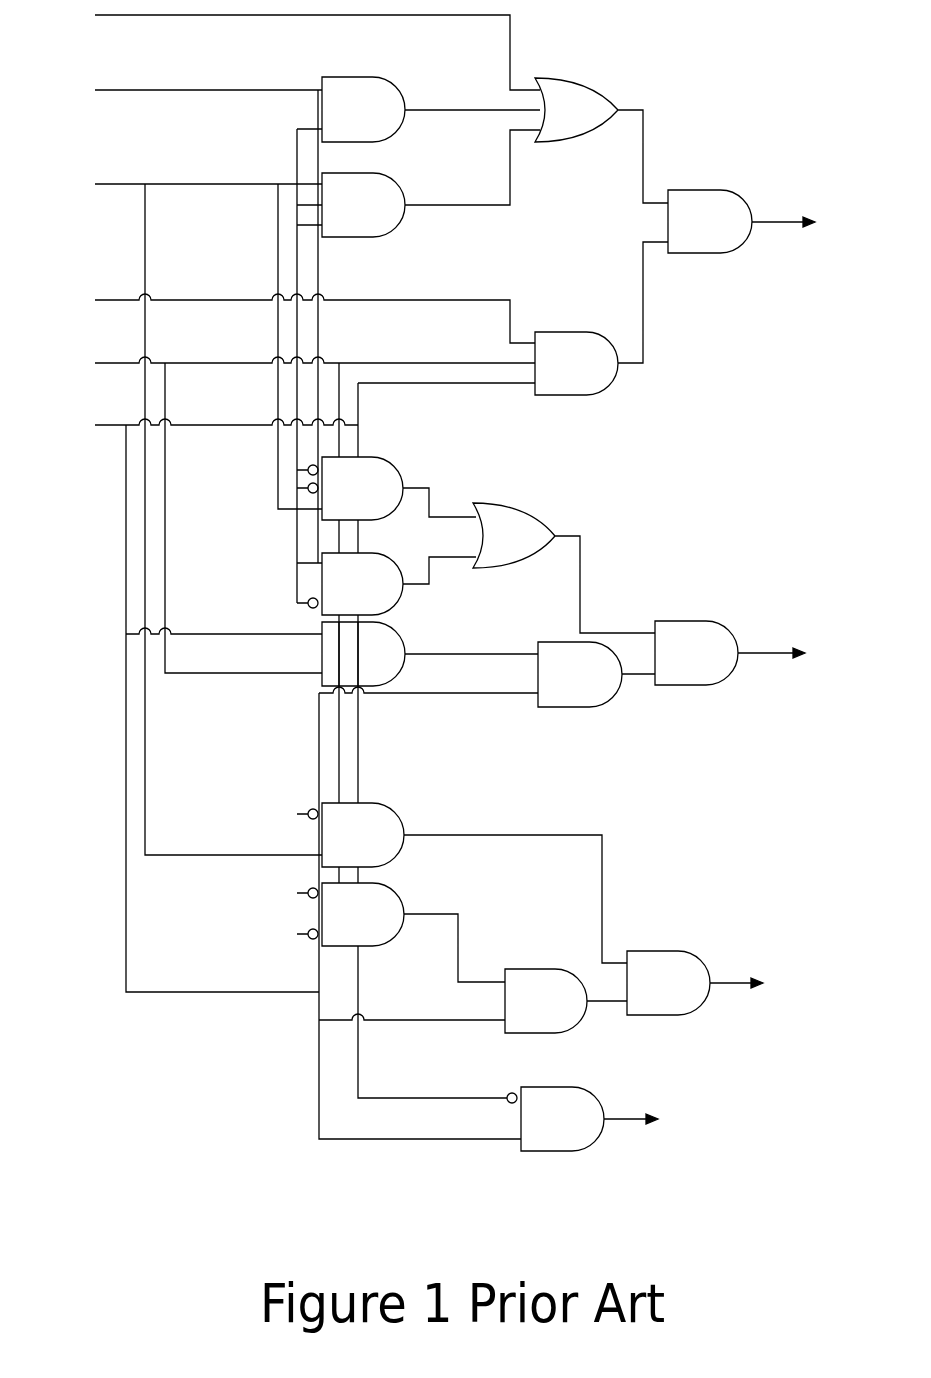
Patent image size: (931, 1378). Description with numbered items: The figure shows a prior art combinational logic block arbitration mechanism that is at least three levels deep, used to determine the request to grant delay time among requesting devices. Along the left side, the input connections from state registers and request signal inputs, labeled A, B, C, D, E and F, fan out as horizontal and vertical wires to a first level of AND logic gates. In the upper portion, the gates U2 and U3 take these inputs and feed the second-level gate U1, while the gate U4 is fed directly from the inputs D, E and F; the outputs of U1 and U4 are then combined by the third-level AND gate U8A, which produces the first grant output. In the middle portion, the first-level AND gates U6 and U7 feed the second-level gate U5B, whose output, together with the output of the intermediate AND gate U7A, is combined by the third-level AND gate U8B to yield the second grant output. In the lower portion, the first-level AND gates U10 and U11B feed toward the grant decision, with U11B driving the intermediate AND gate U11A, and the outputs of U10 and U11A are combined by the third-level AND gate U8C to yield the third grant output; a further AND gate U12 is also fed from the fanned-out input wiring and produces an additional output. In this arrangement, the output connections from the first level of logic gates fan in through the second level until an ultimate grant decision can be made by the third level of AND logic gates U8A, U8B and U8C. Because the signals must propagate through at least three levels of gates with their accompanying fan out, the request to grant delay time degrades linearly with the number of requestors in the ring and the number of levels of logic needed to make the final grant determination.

The input connection A is at (304, 45).
The input connection B is at (195, 318).
The input connection C is at (195, 511).
The input connection D is at (301, 313).
The input connection E is at (301, 615).
The input connection F is at (213, 700).
The logic gate U1 is at (601, 140).
The AND logic gate U2 is at (431, 109).
The AND logic gate U3 is at (431, 183).
The AND logic gate U4 is at (601, 318).
The logic gate U5B is at (564, 568).
The AND logic gate U6 is at (399, 488).
The AND logic gate U7 is at (399, 584).
The AND logic gate U7A is at (596, 674).
The third level AND logic gate U8A is at (741, 221).
The third level AND logic gate U8B is at (563, 653).
The third level AND logic gate U8C is at (695, 983).
The AND logic gate U10 is at (474, 883).
The AND logic gate U11A is at (566, 1001).
The AND logic gate U11B is at (413, 932).
The AND logic gate U12 is at (589, 1119).